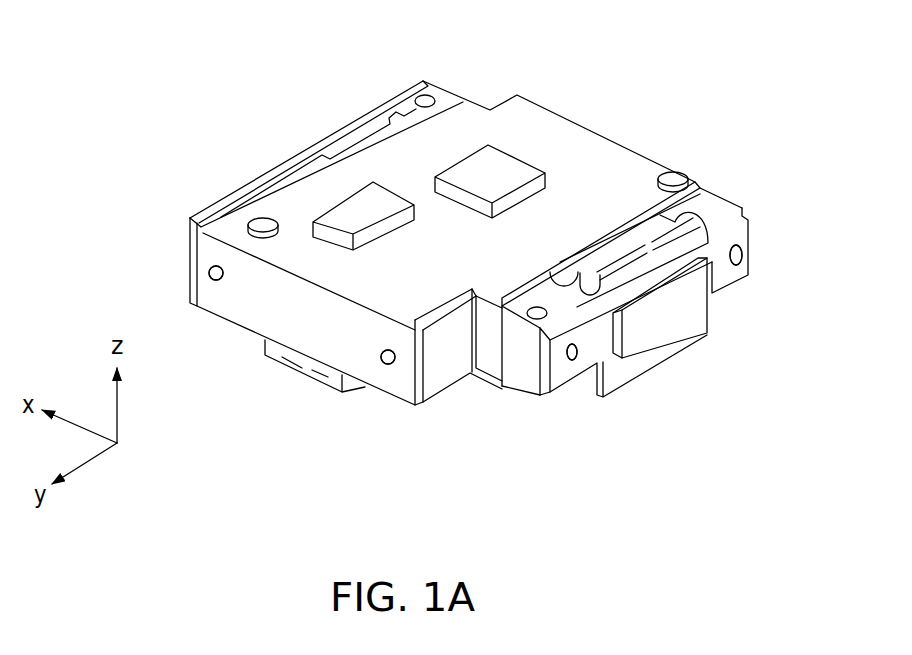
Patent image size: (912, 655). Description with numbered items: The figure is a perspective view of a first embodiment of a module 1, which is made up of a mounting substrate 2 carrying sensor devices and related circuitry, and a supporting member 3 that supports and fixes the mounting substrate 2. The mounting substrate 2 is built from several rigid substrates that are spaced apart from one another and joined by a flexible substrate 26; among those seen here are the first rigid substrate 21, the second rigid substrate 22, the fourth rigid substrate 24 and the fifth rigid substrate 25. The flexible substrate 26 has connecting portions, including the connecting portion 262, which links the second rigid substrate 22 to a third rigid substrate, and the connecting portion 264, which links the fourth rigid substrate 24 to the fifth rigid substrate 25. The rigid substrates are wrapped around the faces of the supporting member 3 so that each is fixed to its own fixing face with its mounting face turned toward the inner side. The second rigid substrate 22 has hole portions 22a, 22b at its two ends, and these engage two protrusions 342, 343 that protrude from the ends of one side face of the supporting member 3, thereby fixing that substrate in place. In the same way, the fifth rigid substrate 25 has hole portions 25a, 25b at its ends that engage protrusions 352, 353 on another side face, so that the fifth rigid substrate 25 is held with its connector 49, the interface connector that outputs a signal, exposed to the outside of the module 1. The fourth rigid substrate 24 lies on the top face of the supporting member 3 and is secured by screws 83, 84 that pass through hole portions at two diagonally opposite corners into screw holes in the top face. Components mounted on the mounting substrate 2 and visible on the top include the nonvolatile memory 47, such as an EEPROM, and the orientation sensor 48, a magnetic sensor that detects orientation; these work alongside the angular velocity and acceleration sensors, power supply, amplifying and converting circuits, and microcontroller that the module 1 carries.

The module 1 is at (700, 66).
The mounting substrate 2 is at (539, 102).
The supporting member 3 is at (521, 400).
The first rigid substrate 21 is at (338, 133).
The second rigid substrate 22 is at (248, 305).
The hole portion 22a is at (389, 364).
The hole portion 22b is at (214, 272).
The fourth rigid substrate 24 is at (572, 138).
The fifth rigid substrate 25 is at (635, 364).
The hole portion 25a is at (742, 250).
The hole portion 25b is at (574, 358).
The flexible substrate 26 is at (708, 204).
The nonvolatile memory 47 is at (343, 213).
The orientation sensor 48 is at (481, 168).
The connector 49 is at (670, 313).
The screw 83 is at (675, 177).
The screw 84 is at (262, 224).
The connecting portion 262 is at (285, 358).
The connecting portion 264 is at (576, 272).
The protrusion 342 is at (384, 362).
The protrusion 343 is at (215, 282).
The protrusion 352 is at (738, 266).
The protrusion 353 is at (571, 360).